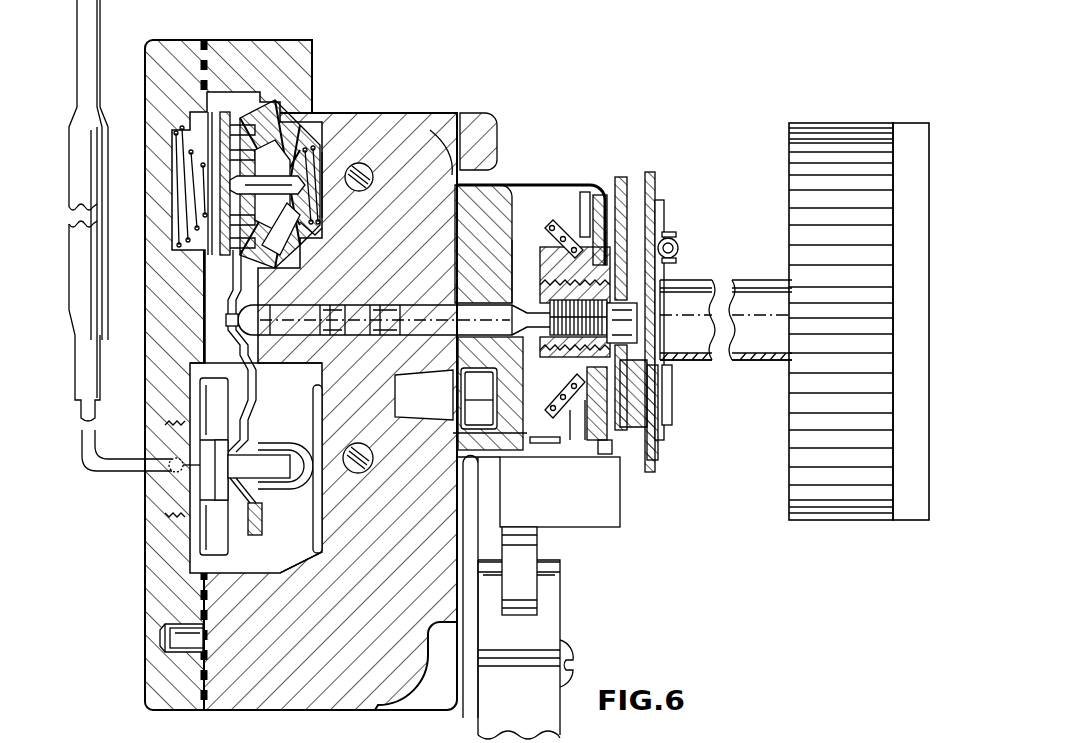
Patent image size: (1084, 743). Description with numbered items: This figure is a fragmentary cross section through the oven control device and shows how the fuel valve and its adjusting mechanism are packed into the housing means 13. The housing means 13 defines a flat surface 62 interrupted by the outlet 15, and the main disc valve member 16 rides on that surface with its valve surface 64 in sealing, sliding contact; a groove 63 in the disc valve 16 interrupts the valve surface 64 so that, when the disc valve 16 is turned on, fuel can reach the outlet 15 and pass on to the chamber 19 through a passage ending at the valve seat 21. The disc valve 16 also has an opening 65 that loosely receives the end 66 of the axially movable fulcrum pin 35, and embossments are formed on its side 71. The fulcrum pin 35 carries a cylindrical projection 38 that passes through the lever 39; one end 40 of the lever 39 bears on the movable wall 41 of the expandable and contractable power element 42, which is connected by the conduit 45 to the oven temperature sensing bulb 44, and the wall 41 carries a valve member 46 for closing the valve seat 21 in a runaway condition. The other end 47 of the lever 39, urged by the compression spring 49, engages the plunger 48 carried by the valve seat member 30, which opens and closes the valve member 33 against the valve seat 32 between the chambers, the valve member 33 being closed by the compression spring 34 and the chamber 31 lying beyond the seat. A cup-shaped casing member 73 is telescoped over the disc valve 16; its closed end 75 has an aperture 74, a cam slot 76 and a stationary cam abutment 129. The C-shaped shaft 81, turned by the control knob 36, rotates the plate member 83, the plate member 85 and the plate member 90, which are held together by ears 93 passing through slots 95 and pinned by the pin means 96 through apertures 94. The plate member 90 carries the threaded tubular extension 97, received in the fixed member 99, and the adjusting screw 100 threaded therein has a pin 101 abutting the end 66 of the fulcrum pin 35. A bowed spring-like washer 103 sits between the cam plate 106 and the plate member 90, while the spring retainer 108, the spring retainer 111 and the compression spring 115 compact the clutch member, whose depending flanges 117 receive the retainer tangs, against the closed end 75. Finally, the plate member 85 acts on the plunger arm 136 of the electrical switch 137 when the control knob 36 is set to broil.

The housing means 13 is at (433, 113).
The outlet 15 is at (436, 426).
The main disc valve member 16 is at (473, 170).
The chamber 19 is at (292, 382).
The valve seat 21 is at (322, 540).
The valve seat member 30 is at (303, 108).
The chamber 31 is at (308, 222).
The valve seat 32 is at (287, 205).
The valve member 33 is at (352, 118).
The compression spring 34 is at (322, 200).
The fulcrum pin 35 is at (415, 305).
The control knob 36 is at (822, 121).
The cylindrical projection 38 is at (231, 312).
The lever 39 is at (238, 337).
The end of lever 40 is at (248, 440).
The movable wall 41 is at (253, 495).
The expandable and contractable power element 42 is at (200, 537).
The oven temperature sensing bulb 44 is at (110, 135).
The conduit 45 is at (123, 478).
The valve member 46 is at (312, 552).
The end of lever 47 is at (232, 115).
The plunger 48 is at (323, 113).
The compression spring 49 is at (194, 135).
The flat surface 62 is at (483, 190).
The groove 63 is at (492, 435).
The valve surface 64 is at (455, 200).
The opening 65 is at (525, 300).
The end of fulcrum pin 66 is at (525, 270).
The side of disc valve 71 is at (503, 185).
The cup-shaped casing member 73 is at (575, 185).
The aperture 74 is at (597, 363).
The closed end 75 is at (612, 180).
The cam slot 76 is at (617, 450).
The C-shaped shaft 81 is at (751, 362).
The plate member 83 is at (665, 215).
The plate member 85 is at (660, 185).
The plate member 90 is at (660, 392).
The ears 93 is at (678, 260).
The apertures 94 is at (673, 243).
The slots 95 is at (670, 232).
The pin means 96 is at (676, 255).
The tubular extension 97 is at (540, 275).
The member 99 is at (575, 250).
The adjusting screw 100 is at (726, 320).
The pin 101 is at (479, 398).
The bowed spring-like washer 103 is at (655, 376).
The cam plate 106 is at (665, 430).
The spring retainer 108 is at (588, 435).
The spring retainer 111 is at (572, 420).
The compression spring 115 is at (550, 410).
The depending flanges 117 is at (575, 442).
The stationary cam abutment 129 is at (614, 449).
The plunger arm 136 is at (537, 587).
The electrical switch 137 is at (553, 628).